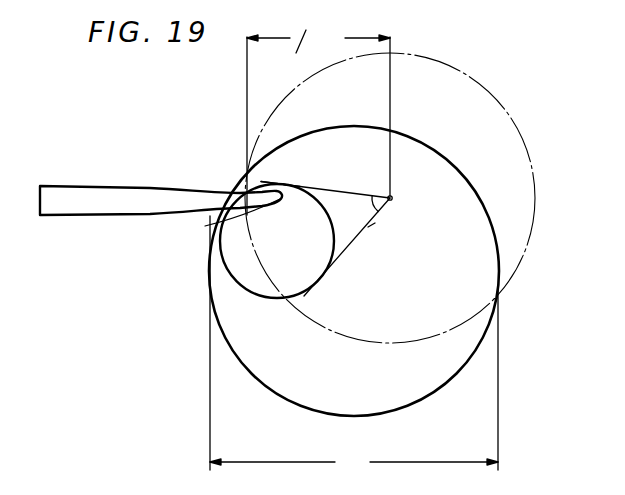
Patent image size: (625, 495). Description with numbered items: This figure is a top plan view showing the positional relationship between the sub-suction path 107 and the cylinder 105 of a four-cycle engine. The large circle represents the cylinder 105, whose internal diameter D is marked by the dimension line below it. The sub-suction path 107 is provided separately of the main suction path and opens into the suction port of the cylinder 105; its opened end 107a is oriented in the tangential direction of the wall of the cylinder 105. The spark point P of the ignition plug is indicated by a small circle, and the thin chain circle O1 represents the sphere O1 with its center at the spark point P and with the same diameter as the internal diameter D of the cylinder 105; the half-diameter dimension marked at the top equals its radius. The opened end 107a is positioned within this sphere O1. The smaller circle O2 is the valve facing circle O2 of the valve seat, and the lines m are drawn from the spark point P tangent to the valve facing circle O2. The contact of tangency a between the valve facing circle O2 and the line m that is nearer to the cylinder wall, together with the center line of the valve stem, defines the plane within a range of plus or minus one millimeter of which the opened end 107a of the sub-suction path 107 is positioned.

The sub-suction path 107 is at (144, 187).
The opened end of sub-suction path 107a is at (232, 214).
The cylinder 105 is at (442, 390).
The sphere O1 is at (467, 73).
The valve facing circle O2 is at (238, 288).
The spark point P is at (393, 196).
The contact of tangency a is at (283, 185).
The lines drawn from spark point m is at (381, 226).
The internal diameter of cylinder D is at (354, 252).